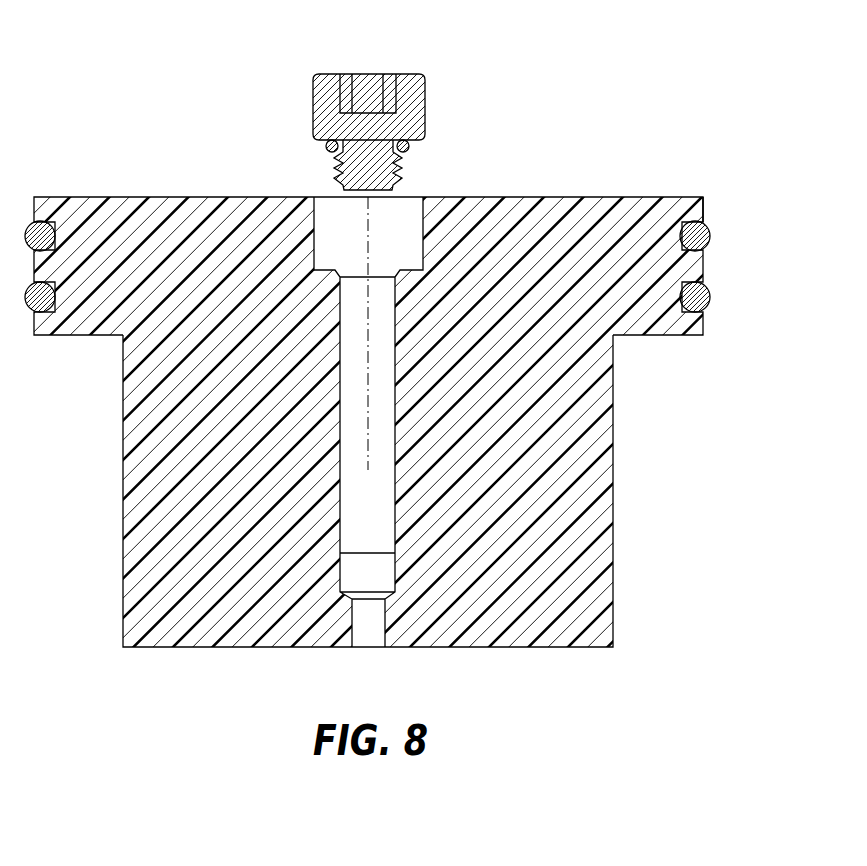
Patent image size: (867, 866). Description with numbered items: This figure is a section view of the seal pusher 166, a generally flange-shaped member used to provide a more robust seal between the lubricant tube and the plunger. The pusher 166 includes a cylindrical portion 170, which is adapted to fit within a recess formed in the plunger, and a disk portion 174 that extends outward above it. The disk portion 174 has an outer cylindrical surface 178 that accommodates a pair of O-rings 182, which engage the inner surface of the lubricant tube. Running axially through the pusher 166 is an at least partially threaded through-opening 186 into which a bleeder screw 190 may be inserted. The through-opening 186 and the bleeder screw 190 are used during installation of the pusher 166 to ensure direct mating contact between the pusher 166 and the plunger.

The seal pusher 166 is at (481, 71).
The cylindrical portion 170 is at (605, 541).
The disk portion 174 is at (511, 222).
The outer cylindrical surface 178 is at (703, 205).
The O-rings 182 is at (711, 239).
The through-opening 186 is at (342, 512).
The bleeder screw 190 is at (360, 73).